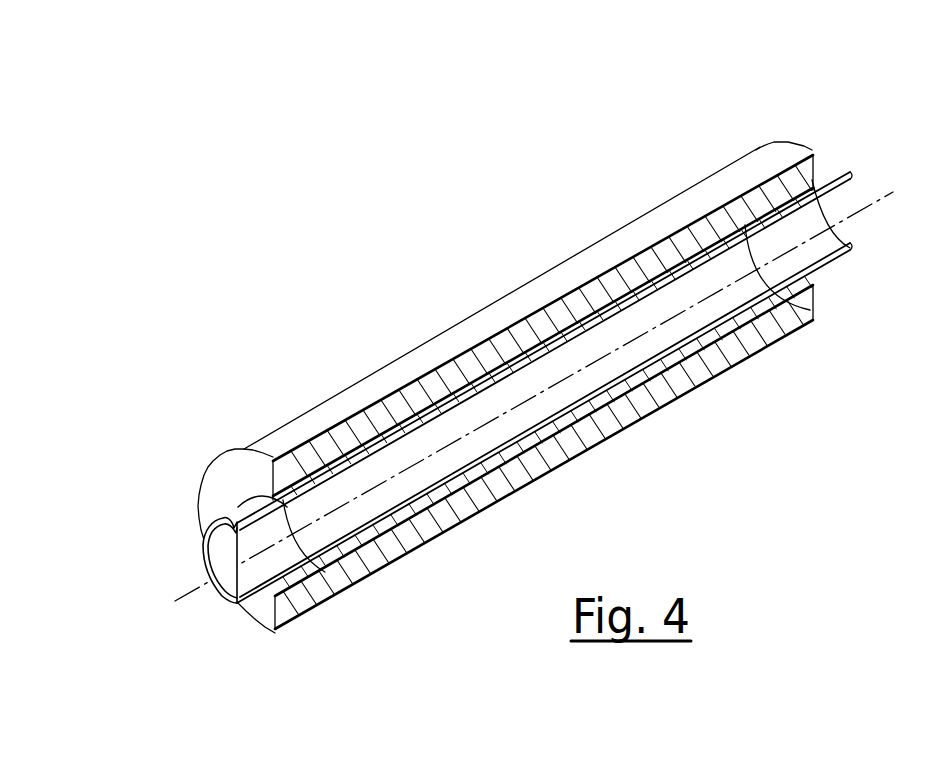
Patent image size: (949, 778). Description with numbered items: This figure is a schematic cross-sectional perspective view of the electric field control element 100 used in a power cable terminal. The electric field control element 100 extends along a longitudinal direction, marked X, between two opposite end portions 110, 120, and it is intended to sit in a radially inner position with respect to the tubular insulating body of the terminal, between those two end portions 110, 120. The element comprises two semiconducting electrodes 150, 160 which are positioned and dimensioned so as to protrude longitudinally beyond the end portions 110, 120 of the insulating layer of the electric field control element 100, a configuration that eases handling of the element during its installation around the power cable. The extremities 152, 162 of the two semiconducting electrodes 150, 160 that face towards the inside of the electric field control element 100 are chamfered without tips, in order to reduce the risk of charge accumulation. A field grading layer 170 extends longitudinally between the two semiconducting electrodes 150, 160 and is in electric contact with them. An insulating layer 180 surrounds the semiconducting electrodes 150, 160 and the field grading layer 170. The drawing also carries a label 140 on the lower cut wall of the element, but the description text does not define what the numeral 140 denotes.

The electric field control element 100 is at (486, 361).
The end portion 110 is at (569, 332).
The end portion 120 is at (483, 431).
The lower cut wall of housing 140 is at (590, 448).
The semiconducting electrode 150 is at (236, 602).
The extremity 152 is at (845, 262).
The semiconducting electrode 160 is at (856, 254).
The extremity 162 is at (338, 485).
The field grading layer 170 is at (370, 445).
The insulating layer 180 is at (822, 148).